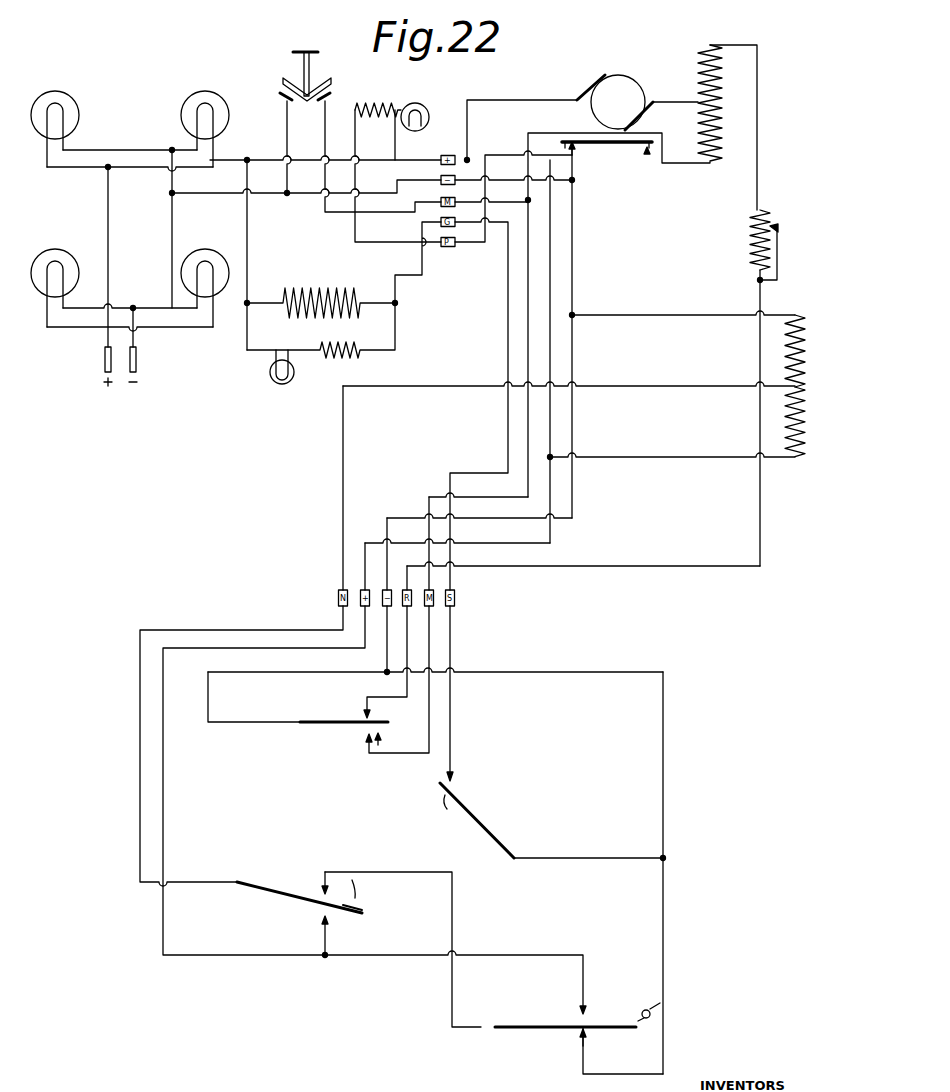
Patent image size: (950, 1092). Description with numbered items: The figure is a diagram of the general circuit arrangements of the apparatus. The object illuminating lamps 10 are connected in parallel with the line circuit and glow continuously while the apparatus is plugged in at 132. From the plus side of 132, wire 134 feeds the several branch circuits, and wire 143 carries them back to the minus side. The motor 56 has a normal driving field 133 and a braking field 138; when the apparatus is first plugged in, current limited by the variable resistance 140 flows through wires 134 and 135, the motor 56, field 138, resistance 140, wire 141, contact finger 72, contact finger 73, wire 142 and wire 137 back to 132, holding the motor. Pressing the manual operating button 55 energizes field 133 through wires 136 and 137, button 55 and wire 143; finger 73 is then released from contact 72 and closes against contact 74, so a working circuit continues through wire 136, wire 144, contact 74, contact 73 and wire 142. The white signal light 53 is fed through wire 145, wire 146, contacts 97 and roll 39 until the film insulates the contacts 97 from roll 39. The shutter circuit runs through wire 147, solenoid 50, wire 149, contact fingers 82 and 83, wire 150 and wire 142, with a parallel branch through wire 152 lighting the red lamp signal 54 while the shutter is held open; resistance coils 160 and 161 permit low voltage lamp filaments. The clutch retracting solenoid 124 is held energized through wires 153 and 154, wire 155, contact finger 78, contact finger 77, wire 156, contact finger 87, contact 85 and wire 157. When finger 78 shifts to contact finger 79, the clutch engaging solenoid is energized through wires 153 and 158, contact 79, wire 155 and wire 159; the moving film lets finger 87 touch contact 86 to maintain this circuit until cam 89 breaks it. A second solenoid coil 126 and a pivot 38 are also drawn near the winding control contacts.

The object illuminating lamps 10 is at (68, 105).
The wire 134 is at (233, 156).
The plug 132 is at (102, 358).
The wire 143 is at (208, 196).
The wire 137 is at (327, 208).
The wire 147 is at (250, 284).
The solenoid 50 is at (347, 298).
The resistance coil 161 is at (334, 368).
The wire 152 is at (384, 352).
The red lamp signal 54 is at (275, 378).
The manual operating button 55 is at (311, 50).
The wire 146 is at (352, 153).
The resistance coil 160 is at (376, 96).
The white signal light 53 is at (418, 103).
The wire 145 is at (402, 149).
The wire 149 is at (428, 262).
The wire 135 is at (506, 100).
The motor 56 is at (634, 82).
The field 138 is at (700, 48).
The normal driving field 133 is at (757, 165).
The variable resistance 140 is at (750, 242).
The wire 136 is at (538, 133).
The contacts 97 is at (562, 142).
The roll 39 is at (625, 150).
The wire 159 is at (690, 306).
The field coil 126 is at (785, 346).
The solenoid 124 is at (785, 420).
The wire 153 is at (570, 332).
The wire 155 is at (608, 388).
The wire 154 is at (637, 458).
The wire 142 is at (575, 293).
The wire 144 is at (508, 365).
The wire 158 is at (576, 498).
The wire 141 is at (660, 566).
The contact finger 73 is at (340, 726).
The contact finger 72 is at (382, 718).
The contact finger 74 is at (369, 750).
The contact finger 82 is at (458, 768).
The contact finger 83 is at (482, 820).
The wire 150 is at (572, 857).
The wire 157 is at (666, 932).
The contact finger 78 is at (276, 890).
The contact finger 77 is at (329, 888).
The contact finger 79 is at (320, 926).
The wire 156 is at (456, 926).
The contact finger 87 is at (536, 1032).
The contact 86 is at (586, 1004).
The contact 85 is at (589, 1066).
The cam 89 is at (655, 1006).
The switch arm 38 is at (652, 1016).